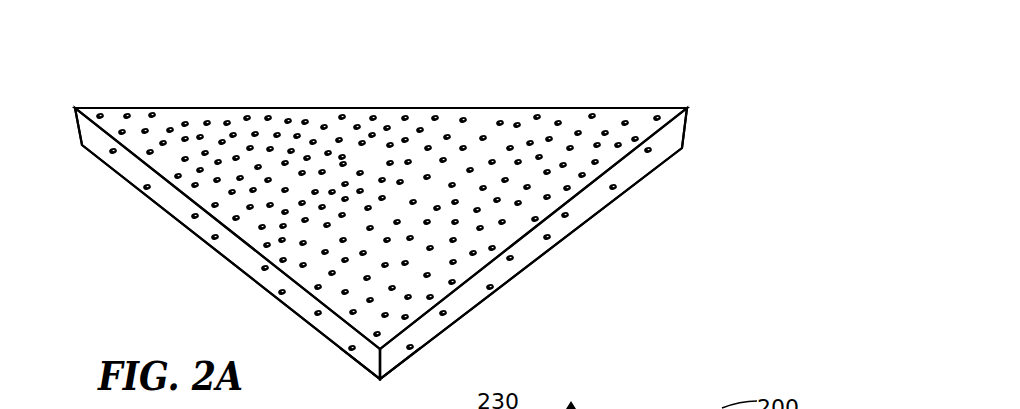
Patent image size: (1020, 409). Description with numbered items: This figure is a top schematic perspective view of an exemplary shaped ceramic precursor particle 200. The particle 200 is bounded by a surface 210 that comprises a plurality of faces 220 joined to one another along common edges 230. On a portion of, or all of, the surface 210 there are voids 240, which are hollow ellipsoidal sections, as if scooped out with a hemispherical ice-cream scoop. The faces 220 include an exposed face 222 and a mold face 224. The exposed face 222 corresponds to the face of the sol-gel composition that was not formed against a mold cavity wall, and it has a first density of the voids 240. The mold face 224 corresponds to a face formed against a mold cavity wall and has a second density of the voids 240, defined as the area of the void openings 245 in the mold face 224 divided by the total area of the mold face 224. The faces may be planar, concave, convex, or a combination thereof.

The shaped ceramic precursor particle 200 is at (561, 71).
The surface 210 is at (168, 116).
The faces 220 is at (170, 165).
The exposed face 222 is at (553, 182).
The mold face 224 is at (248, 263).
The common edges 230 is at (333, 312).
The voids 240 is at (291, 149).
The void openings 245 is at (342, 213).